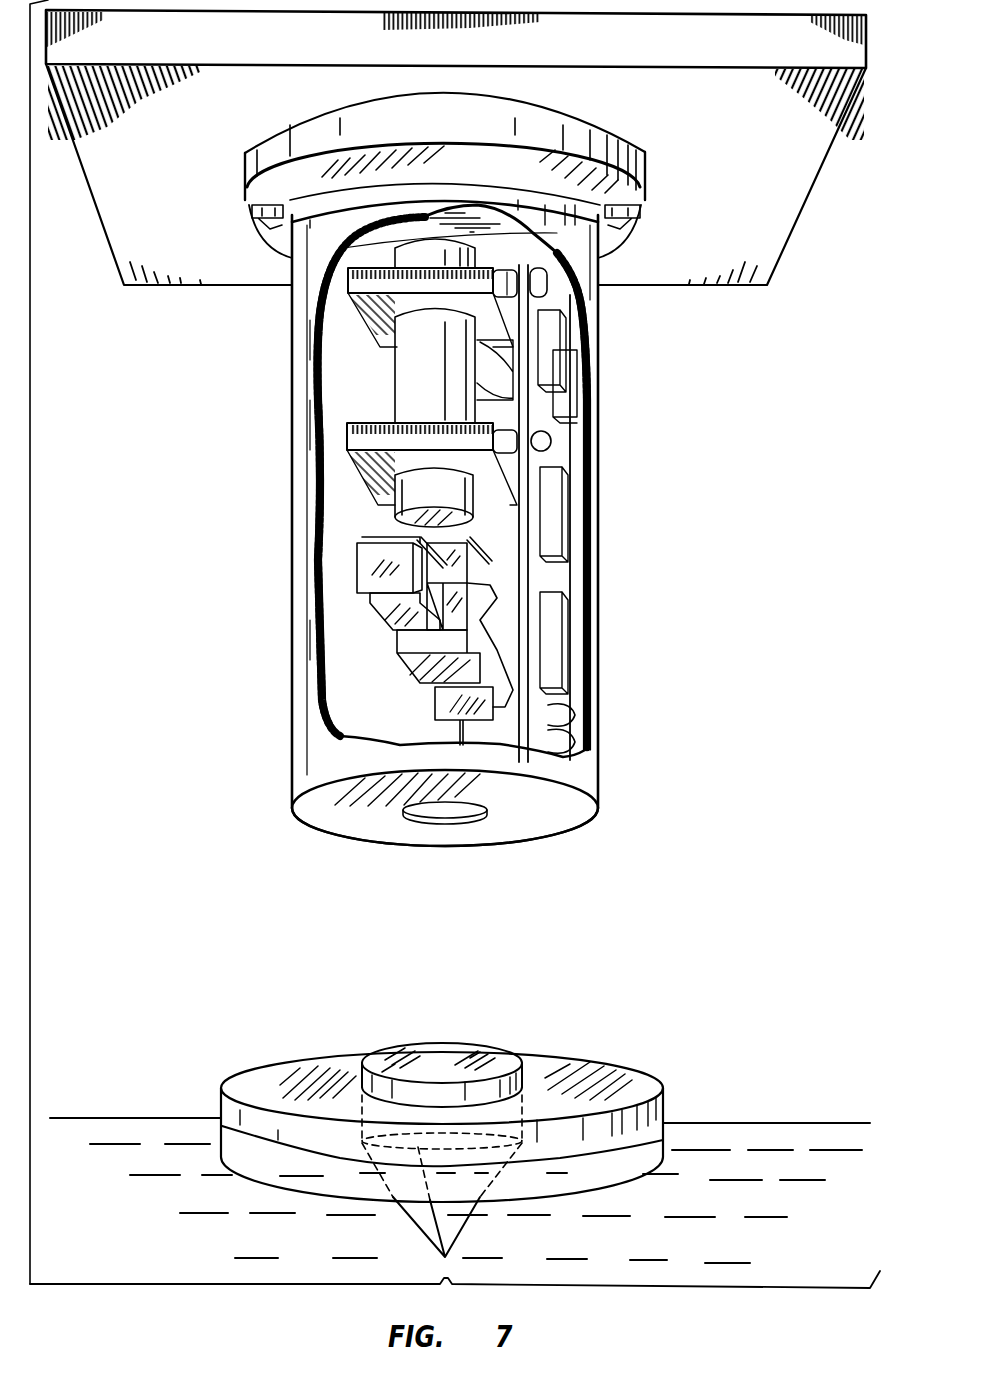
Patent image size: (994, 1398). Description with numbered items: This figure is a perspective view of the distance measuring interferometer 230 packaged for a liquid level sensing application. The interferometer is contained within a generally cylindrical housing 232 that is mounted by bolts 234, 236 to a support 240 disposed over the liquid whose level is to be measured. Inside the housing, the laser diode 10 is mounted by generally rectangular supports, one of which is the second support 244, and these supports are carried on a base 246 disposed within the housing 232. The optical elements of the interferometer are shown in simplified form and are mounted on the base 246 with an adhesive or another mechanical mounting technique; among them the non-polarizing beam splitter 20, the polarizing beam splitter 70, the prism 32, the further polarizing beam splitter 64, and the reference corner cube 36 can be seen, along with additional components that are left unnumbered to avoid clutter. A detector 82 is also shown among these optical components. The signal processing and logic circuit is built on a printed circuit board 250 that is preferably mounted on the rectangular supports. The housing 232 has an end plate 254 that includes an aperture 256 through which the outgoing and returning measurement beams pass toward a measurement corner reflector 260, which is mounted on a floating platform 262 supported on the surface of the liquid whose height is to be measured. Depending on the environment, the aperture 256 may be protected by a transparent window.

The support 240 is at (790, 212).
The cylindrical housing 232 is at (300, 320).
The bolt 236 is at (262, 233).
The bolt 234 is at (625, 232).
The second generally rectangular support 244 is at (383, 330).
The laser diode 10 is at (410, 405).
The reference corner cube 36 is at (480, 380).
The printed circuit board 250 is at (560, 465).
The detector 82 is at (357, 552).
The polarizing beam splitter 64 is at (485, 575).
The polarizing beam splitter 70 is at (377, 619).
The base 246 is at (385, 637).
The non-polarizing beam splitter 20 is at (427, 690).
The prism 32 is at (490, 667).
The distance measuring interferometer 230 is at (668, 596).
The end plate 254 is at (568, 823).
The aperture 256 is at (440, 822).
The measurement corner reflector 260 is at (493, 1058).
The floating platform 262 is at (622, 1072).